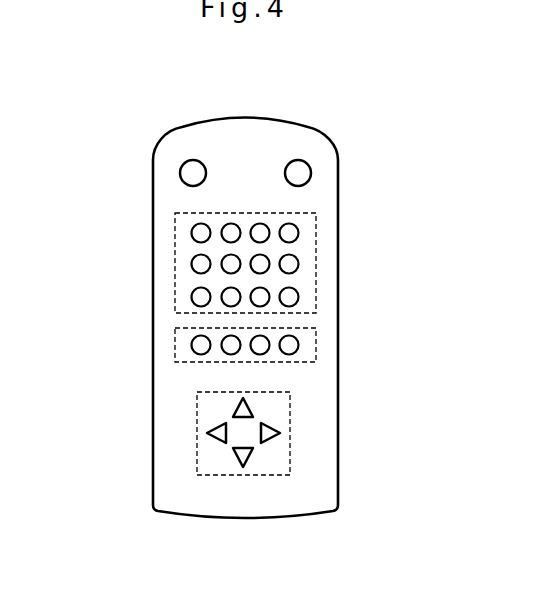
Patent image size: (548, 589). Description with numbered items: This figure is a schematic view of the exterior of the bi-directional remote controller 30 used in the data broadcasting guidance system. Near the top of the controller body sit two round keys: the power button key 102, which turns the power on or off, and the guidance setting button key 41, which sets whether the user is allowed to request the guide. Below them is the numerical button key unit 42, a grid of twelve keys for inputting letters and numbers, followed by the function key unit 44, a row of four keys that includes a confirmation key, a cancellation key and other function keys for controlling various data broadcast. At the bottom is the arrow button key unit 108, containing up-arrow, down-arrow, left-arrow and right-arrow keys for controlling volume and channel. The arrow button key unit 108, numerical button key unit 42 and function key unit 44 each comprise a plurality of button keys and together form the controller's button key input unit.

The bi-directional remote controller 30 is at (315, 138).
The power button key 102 is at (187, 160).
The guidance setting button key 41 is at (311, 172).
The numerical button key unit 42 is at (316, 262).
The function key unit 44 is at (175, 344).
The arrow button key unit 108 is at (290, 432).